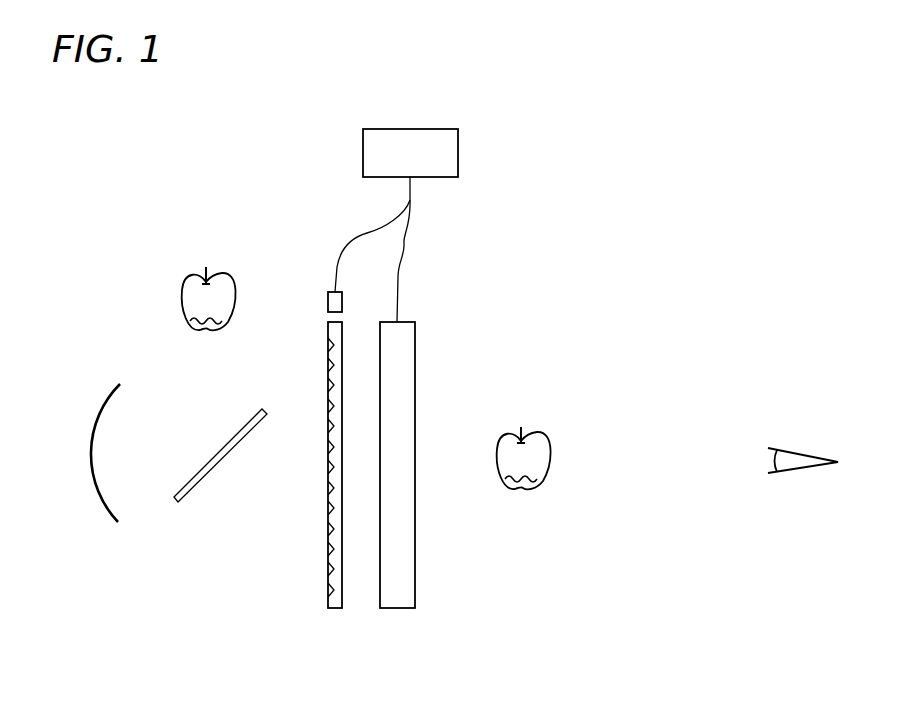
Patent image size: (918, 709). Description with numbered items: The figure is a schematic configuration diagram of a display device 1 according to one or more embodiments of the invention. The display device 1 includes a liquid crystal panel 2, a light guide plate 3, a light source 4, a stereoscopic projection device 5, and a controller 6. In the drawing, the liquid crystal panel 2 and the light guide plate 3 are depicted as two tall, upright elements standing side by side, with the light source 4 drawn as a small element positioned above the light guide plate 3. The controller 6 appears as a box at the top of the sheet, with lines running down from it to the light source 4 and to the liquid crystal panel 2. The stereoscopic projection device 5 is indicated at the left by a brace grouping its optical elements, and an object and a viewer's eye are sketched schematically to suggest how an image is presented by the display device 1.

The display device 1 is at (596, 626).
The liquid crystal panel 2 is at (397, 608).
The light guide plate 3 is at (335, 608).
The light source 4 is at (342, 300).
The stereoscopic projection device 5 is at (267, 555).
The controller 6 is at (458, 153).